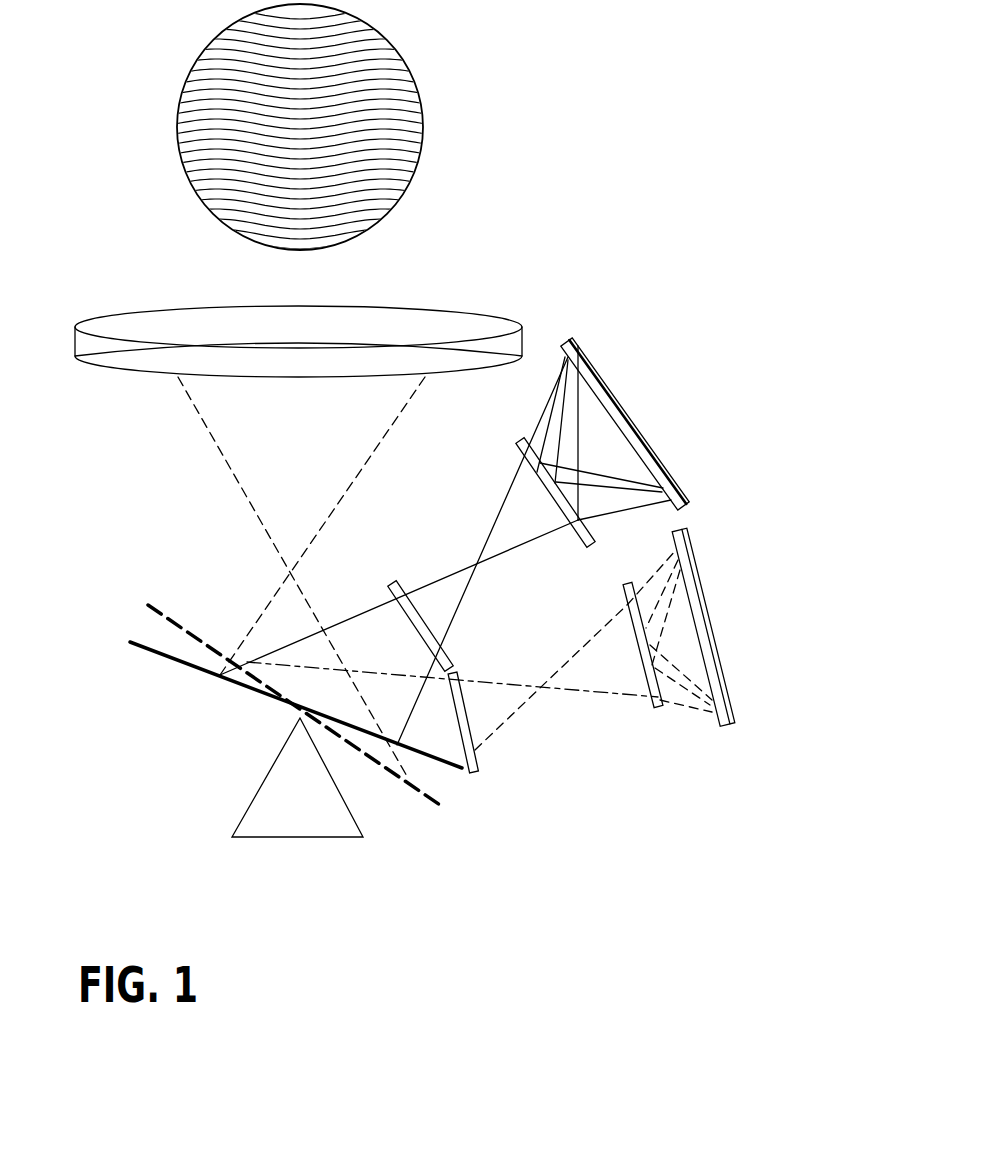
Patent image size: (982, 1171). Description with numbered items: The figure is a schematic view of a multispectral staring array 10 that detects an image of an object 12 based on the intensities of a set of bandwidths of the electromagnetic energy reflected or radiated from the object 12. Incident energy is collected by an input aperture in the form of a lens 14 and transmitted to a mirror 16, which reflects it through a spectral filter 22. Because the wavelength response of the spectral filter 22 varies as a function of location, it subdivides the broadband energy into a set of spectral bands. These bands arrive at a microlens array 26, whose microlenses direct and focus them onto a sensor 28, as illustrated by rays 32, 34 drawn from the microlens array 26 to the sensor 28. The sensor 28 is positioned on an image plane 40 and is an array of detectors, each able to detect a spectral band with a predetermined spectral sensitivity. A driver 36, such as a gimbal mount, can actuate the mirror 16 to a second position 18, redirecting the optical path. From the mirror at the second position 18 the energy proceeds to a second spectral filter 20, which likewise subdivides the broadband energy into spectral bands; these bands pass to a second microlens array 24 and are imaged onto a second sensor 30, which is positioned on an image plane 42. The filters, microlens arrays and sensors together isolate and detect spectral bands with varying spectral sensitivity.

The multispectral staring array 10 is at (594, 39).
The object 12 is at (407, 117).
The lens 14 is at (150, 317).
The mirror 16 is at (443, 768).
The second position of the mirror 18 is at (410, 787).
The second spectral filter 20 is at (480, 768).
The spectral filter 22 is at (395, 585).
The second microlens array 24 is at (655, 713).
The microlens array 26 is at (518, 442).
The sensor 28 is at (618, 387).
The second sensor 30 is at (735, 648).
The ray 32 is at (637, 510).
The ray 34 is at (583, 497).
The driver 36 is at (337, 838).
The image plane 40 is at (567, 338).
The image plane 42 is at (730, 730).